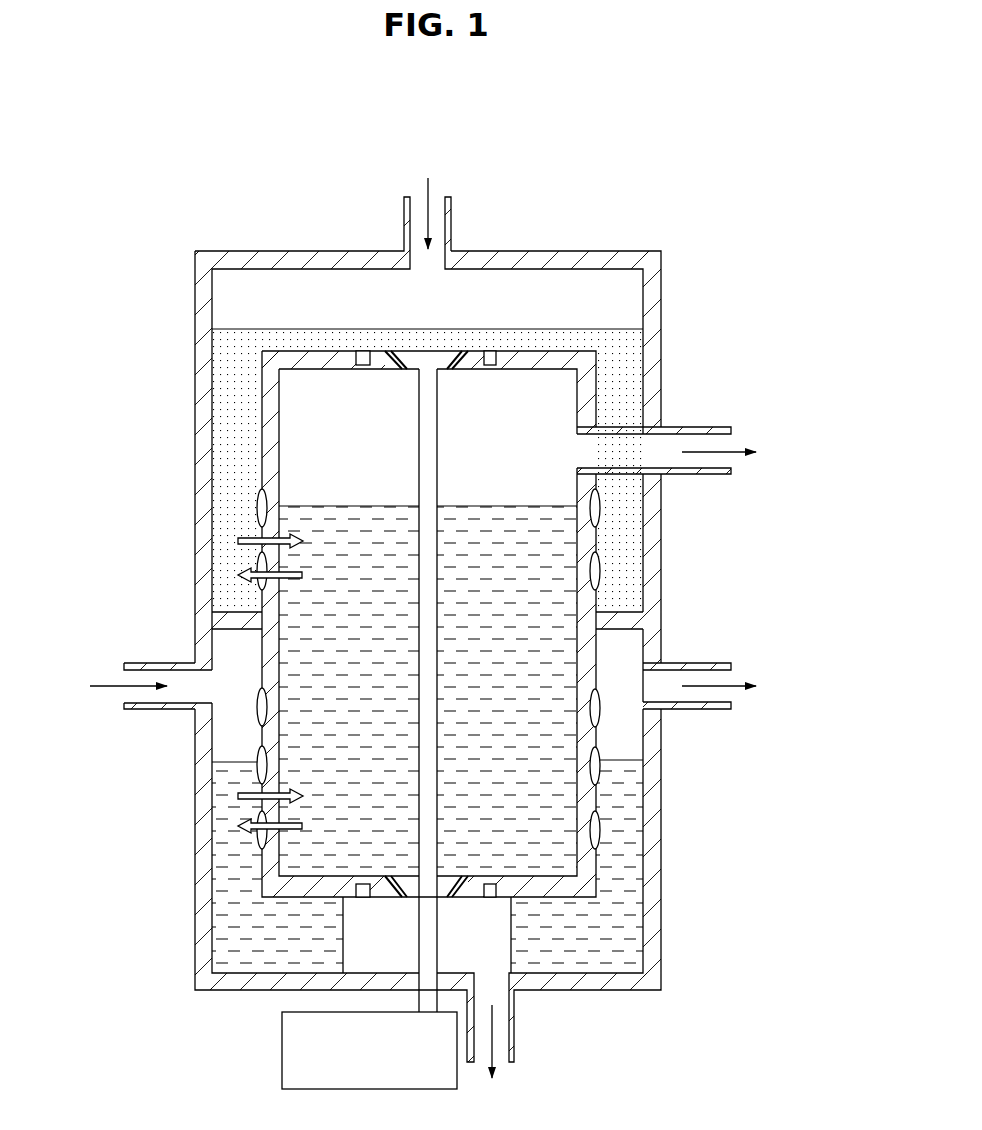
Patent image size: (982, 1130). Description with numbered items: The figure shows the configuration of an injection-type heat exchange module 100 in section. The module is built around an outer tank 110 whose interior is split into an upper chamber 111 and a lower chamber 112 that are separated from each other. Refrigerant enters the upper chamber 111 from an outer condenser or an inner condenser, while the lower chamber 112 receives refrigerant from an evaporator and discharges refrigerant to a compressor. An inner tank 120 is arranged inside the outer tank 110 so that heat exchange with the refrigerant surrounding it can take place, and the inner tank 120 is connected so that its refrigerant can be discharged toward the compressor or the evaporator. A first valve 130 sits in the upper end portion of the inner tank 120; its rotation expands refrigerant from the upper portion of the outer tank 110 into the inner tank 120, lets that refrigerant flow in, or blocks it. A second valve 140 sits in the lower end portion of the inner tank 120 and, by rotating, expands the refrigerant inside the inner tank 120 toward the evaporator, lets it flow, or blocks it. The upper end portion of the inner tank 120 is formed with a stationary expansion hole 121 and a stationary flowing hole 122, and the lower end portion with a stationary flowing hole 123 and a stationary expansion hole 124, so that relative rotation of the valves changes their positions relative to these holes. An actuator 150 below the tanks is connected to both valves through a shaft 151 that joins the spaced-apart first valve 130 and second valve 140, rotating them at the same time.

The injection-type heat exchange module 100 is at (605, 138).
The outer tank 110 is at (245, 249).
The upper chamber 111 is at (206, 425).
The lower chamber 112 is at (206, 790).
The inner tank 120 is at (578, 605).
The stationary expansion hole 121 is at (492, 356).
The stationary flowing hole 122 is at (363, 357).
The stationary flowing hole 123 is at (490, 887).
The stationary expansion hole 124 is at (352, 888).
The first valve 130 is at (440, 358).
The second valve 140 is at (443, 887).
The actuator 150 is at (282, 1053).
The shaft 151 is at (430, 937).